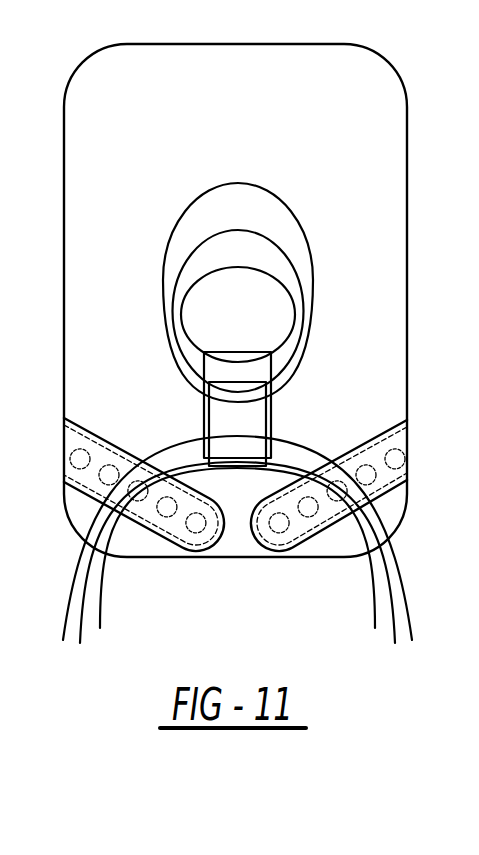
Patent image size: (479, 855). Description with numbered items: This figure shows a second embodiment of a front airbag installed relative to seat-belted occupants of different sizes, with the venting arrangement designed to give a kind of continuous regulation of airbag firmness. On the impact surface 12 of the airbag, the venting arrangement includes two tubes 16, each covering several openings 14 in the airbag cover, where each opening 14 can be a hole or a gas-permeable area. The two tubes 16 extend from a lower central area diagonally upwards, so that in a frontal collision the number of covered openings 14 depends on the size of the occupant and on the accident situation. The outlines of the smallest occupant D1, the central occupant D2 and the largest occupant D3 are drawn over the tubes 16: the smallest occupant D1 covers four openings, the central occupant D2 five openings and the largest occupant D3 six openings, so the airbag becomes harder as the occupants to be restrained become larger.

The impact surface 12 is at (365, 359).
The opening 14 is at (167, 507).
The tube 16 is at (85, 472).
The smallest occupant D1 is at (375, 608).
The central occupant D2 is at (386, 580).
The largest occupant D3 is at (398, 542).